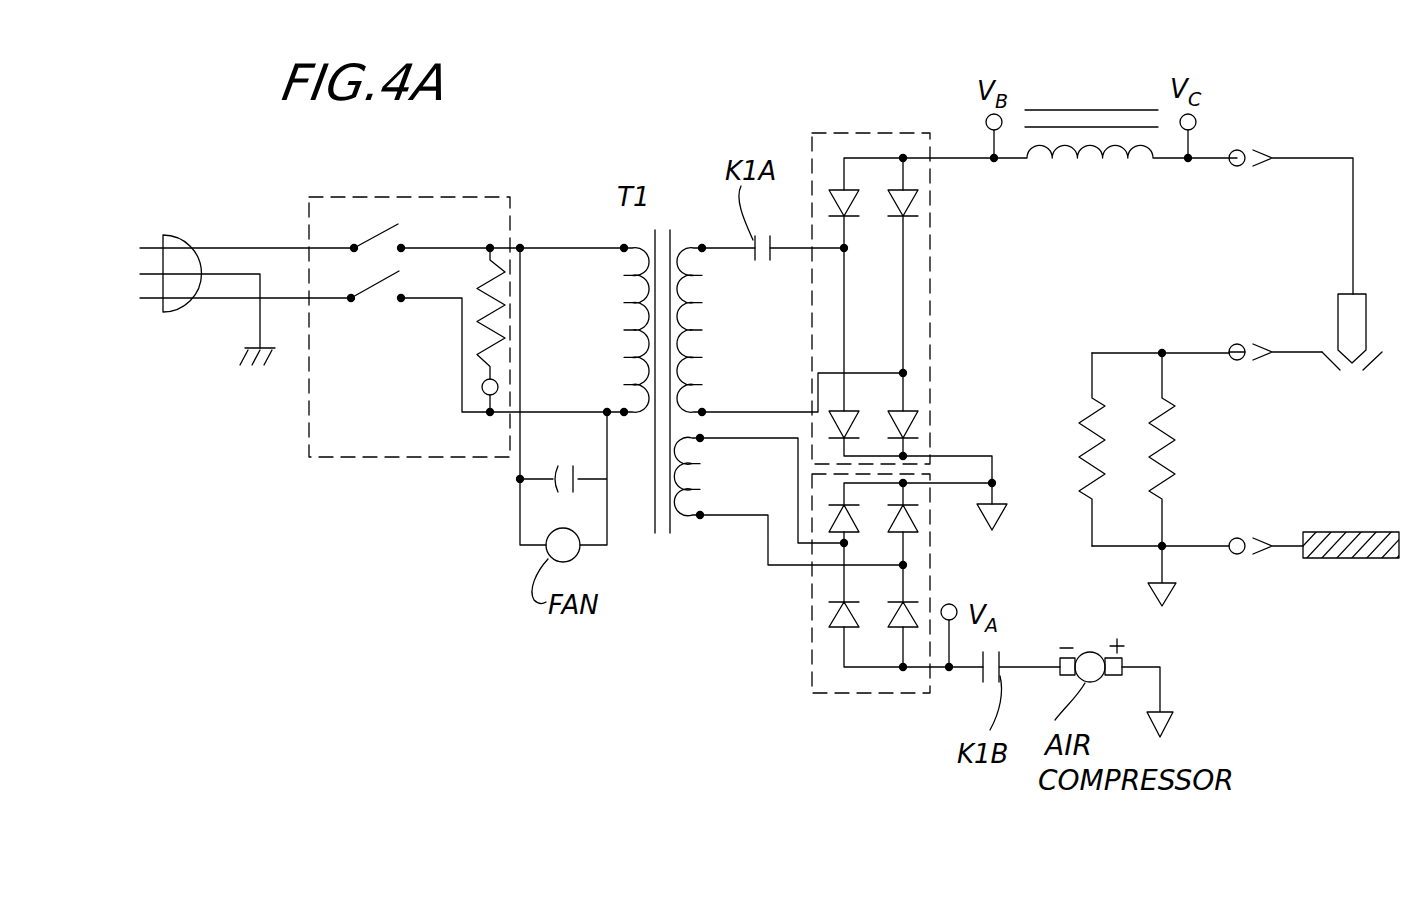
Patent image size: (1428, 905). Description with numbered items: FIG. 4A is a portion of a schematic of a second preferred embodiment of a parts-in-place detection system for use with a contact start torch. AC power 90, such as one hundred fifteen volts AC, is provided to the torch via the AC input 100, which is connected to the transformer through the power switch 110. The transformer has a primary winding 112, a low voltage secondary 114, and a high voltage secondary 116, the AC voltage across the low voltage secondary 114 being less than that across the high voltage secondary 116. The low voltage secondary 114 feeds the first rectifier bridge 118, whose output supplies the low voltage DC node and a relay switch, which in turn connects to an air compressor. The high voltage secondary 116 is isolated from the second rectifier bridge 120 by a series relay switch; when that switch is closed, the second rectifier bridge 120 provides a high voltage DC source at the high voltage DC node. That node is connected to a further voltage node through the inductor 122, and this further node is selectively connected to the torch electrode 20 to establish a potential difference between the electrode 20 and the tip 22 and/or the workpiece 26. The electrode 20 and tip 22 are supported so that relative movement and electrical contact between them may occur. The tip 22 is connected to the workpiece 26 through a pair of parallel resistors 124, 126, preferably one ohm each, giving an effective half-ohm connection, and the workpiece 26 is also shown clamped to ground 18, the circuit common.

The AC power 90 is at (70, 272).
The AC input 100 is at (187, 306).
The power switch 110 is at (467, 197).
The primary winding 112 is at (632, 302).
The low voltage secondary 114 is at (694, 465).
The high voltage secondary 116 is at (690, 306).
The first rectifier bridge 118 is at (900, 697).
The second rectifier bridge 120 is at (921, 132).
The inductor 122 is at (1083, 146).
The resistor 124 is at (1090, 416).
The resistor 126 is at (1170, 400).
The ground 18 is at (1170, 598).
The electrode 20 is at (1368, 316).
The tip 22 is at (1372, 364).
The workpiece 26 is at (1385, 559).